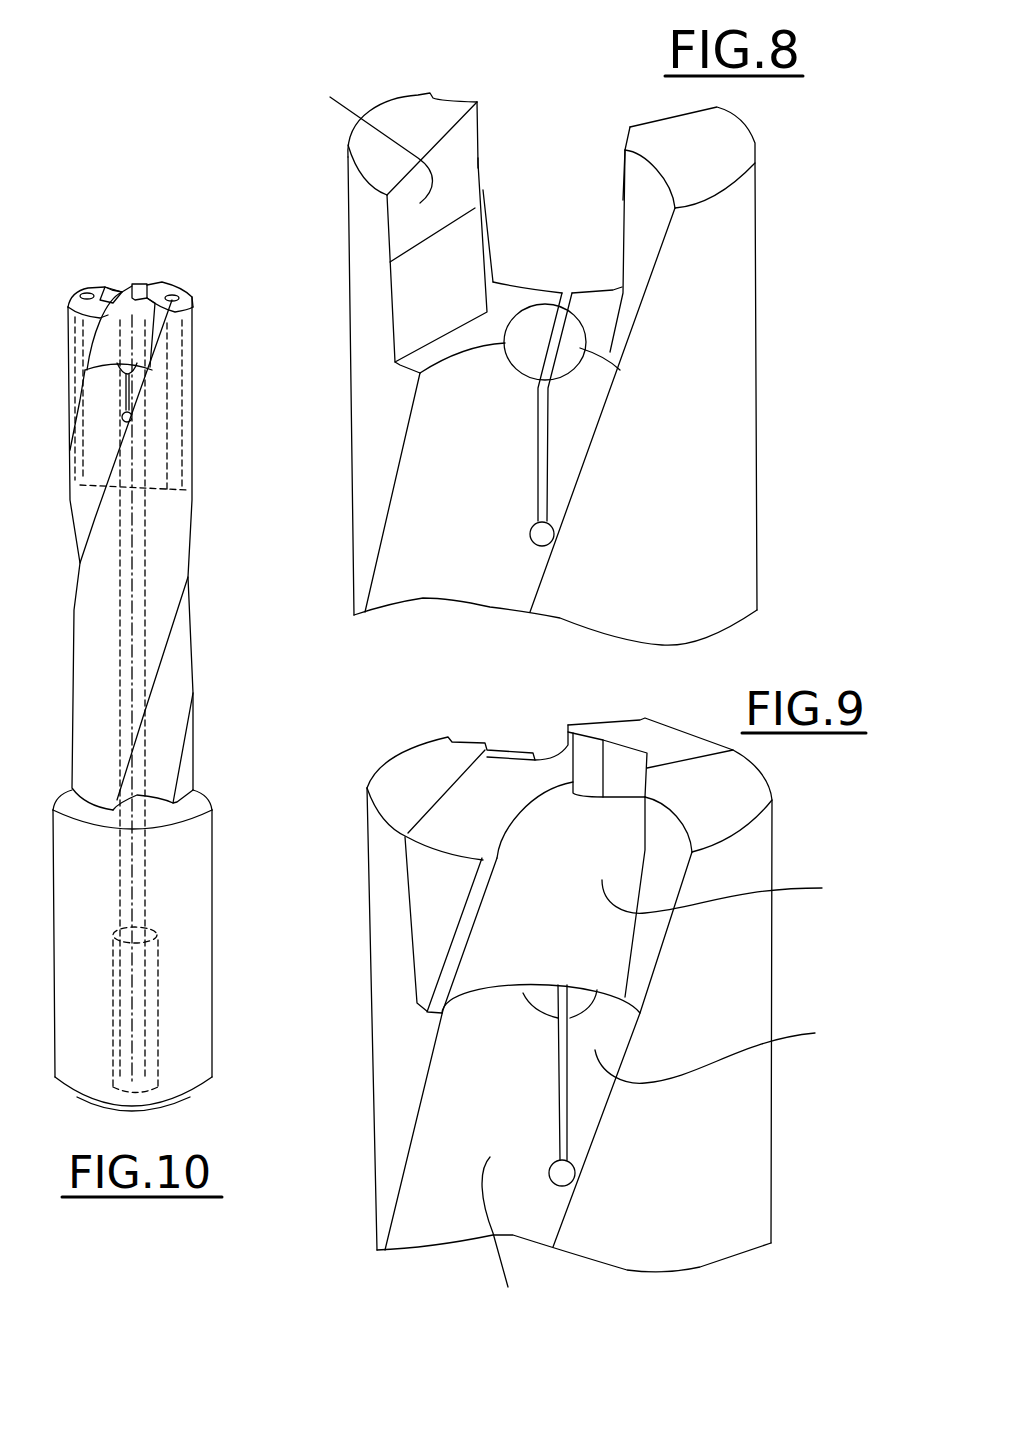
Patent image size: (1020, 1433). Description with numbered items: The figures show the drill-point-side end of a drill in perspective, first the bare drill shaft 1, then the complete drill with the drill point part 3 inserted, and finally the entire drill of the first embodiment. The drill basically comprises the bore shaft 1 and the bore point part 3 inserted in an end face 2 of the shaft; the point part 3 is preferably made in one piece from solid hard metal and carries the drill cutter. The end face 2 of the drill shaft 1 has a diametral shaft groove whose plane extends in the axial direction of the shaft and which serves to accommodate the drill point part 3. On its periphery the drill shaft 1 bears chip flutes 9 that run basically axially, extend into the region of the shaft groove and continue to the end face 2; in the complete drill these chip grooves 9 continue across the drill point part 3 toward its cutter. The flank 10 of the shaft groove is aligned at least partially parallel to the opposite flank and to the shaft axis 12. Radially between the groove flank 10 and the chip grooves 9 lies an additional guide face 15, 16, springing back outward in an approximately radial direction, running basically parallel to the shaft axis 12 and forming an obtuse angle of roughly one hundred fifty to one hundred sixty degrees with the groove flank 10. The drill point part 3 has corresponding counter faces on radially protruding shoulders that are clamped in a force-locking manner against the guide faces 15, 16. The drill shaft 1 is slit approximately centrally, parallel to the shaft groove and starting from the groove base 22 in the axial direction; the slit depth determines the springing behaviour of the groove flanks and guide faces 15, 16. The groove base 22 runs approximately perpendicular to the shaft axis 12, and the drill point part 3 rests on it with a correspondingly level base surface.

In FIG. 8, the drill shaft 1 is at (772, 457).
In FIG. 9, the drill shaft 1 is at (790, 1133).
In FIG. 10, the drill shaft 1 is at (205, 758).
In FIG. 8, the end face 2 is at (557, 143).
In FIG. 9, the end face 2 is at (607, 764).
In FIG. 10, the end face 2 is at (145, 255).
In FIG. 10, the drill point part 3 is at (116, 268).
In FIG. 8, the chip flutes 9 is at (467, 530).
In FIG. 9, the chip flutes 9 is at (661, 1098).
In FIG. 10, the chip flutes 9 is at (175, 702).
In FIG. 8, the flank of shaft groove 10 is at (364, 136).
In FIG. 10, the shaft axis 12 is at (137, 1002).
In FIG. 8, the guide face 15 is at (478, 163).
In FIG. 8, the guide face 16 is at (612, 195).
In FIG. 8, the groove base 22 is at (510, 320).
In FIG. 9, the groove base 22 is at (543, 984).